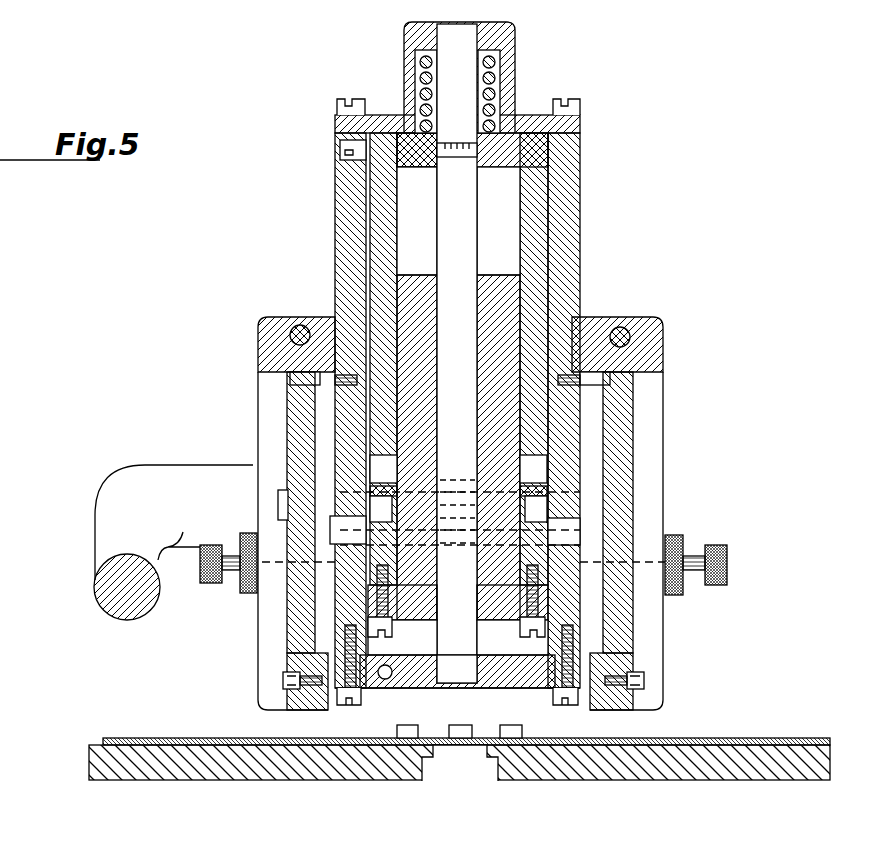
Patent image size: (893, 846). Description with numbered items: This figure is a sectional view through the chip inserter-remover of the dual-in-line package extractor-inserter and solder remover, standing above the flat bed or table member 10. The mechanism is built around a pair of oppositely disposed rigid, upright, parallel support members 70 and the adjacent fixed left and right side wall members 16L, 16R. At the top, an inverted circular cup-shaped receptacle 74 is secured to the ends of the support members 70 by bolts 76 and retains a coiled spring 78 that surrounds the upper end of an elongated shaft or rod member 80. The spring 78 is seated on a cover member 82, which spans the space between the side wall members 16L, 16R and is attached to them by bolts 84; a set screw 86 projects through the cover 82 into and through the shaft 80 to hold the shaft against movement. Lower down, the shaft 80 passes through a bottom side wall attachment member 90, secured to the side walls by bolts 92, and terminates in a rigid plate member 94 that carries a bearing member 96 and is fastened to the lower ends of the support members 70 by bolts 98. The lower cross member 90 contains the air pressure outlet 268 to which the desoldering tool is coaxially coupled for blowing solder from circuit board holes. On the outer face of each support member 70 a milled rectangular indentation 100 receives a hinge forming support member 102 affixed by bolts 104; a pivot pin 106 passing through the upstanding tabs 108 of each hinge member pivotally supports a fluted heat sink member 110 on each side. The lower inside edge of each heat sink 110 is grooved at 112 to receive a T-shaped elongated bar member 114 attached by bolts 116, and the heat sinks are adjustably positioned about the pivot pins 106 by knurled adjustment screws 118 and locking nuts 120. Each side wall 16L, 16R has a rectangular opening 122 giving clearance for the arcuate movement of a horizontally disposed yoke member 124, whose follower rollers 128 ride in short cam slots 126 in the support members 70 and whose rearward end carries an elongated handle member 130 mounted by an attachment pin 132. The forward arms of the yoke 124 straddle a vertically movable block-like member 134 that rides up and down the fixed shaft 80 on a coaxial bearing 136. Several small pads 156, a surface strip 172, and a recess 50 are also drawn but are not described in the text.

The flat bed or table member 10 is at (90, 755).
The left parallel side wall member 16L is at (375, 243).
The right parallel side wall member 16R is at (537, 270).
The recess in base plate 50 is at (425, 758).
The upright parallel support members 70 is at (578, 180).
The inverted circular cup-shaped receptacle 74 is at (505, 38).
The bolts 76 is at (340, 108).
The coiled spring 78 is at (500, 68).
The elongated shaft or rod member 80 is at (447, 42).
The cover member 82 is at (412, 140).
The bolts 84 is at (353, 180).
The set screw 86 is at (505, 135).
The bottom side wall attachment member 90 is at (545, 605).
The bolts 92 is at (393, 633).
The rigid plate member 94 is at (532, 688).
The bearing member 96 is at (478, 683).
The bolts 98 is at (345, 705).
The rectangular indentation 100 is at (330, 320).
The hinge forming support member 102 is at (292, 380).
The bolts 104 is at (300, 400).
The pivot pin 106 is at (292, 337).
The upstanding tabs 108 is at (283, 355).
The fluted heat sink member 110 is at (653, 413).
The groove 112 is at (290, 676).
The T-shaped elongated bar member 114 is at (322, 705).
The bolts 116 is at (282, 686).
The knurled adjustment screws 118 is at (210, 583).
The locking nuts 120 is at (248, 593).
The rectangular opening 122 is at (370, 465).
The yoke member 124 is at (553, 495).
The cam slot 126 is at (370, 500).
The follower roller 128 is at (362, 530).
The handle member 130 is at (110, 605).
The attachment pin 132 is at (283, 492).
The vertically movable block member 134 is at (400, 295).
The coaxial bearing 136 is at (482, 277).
The spacer pads 156 is at (455, 725).
The surface strip 172 is at (785, 740).
The air pressure outlet 268 is at (385, 690).